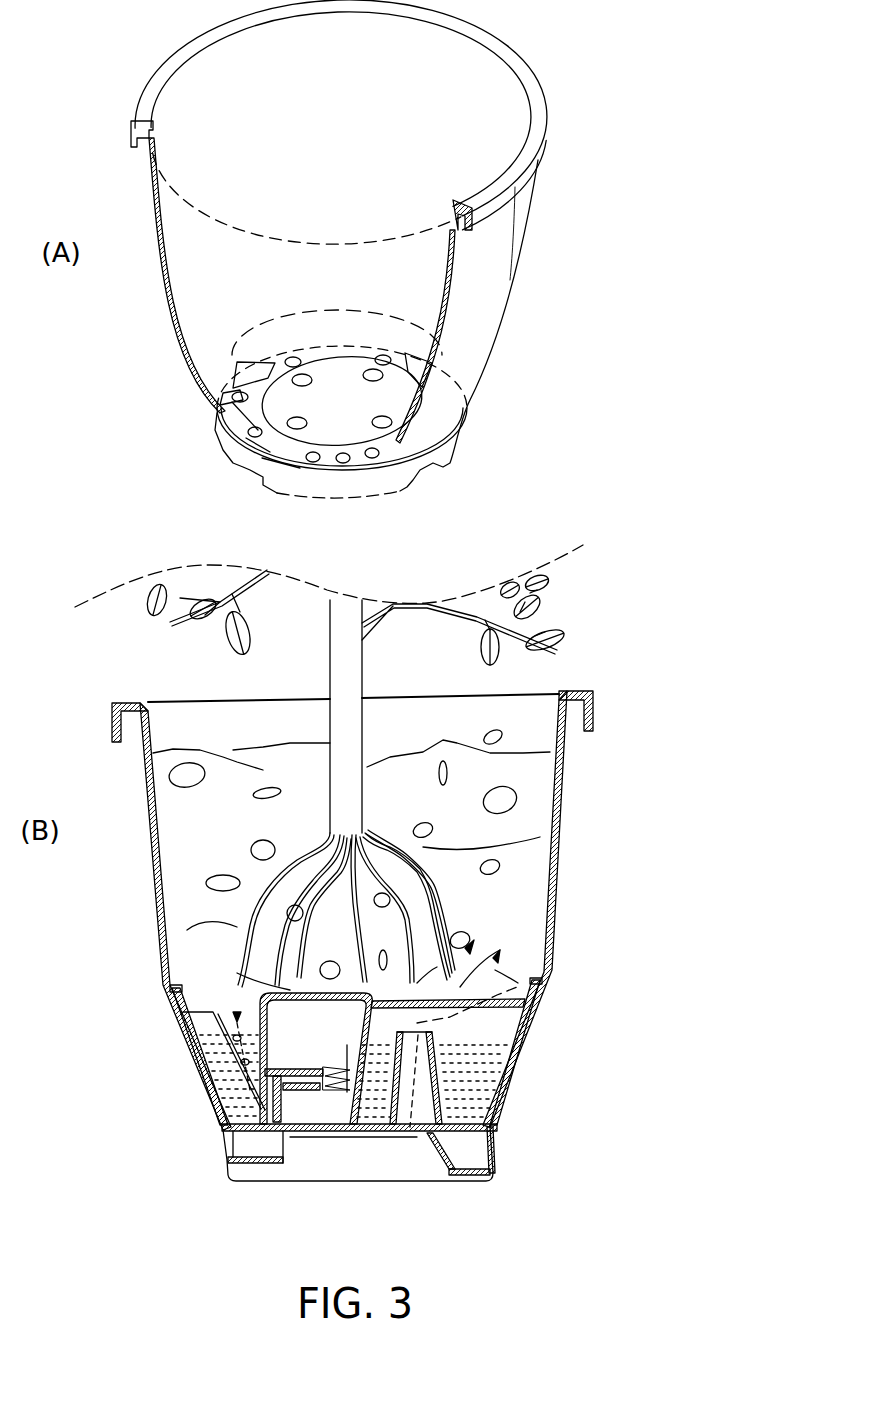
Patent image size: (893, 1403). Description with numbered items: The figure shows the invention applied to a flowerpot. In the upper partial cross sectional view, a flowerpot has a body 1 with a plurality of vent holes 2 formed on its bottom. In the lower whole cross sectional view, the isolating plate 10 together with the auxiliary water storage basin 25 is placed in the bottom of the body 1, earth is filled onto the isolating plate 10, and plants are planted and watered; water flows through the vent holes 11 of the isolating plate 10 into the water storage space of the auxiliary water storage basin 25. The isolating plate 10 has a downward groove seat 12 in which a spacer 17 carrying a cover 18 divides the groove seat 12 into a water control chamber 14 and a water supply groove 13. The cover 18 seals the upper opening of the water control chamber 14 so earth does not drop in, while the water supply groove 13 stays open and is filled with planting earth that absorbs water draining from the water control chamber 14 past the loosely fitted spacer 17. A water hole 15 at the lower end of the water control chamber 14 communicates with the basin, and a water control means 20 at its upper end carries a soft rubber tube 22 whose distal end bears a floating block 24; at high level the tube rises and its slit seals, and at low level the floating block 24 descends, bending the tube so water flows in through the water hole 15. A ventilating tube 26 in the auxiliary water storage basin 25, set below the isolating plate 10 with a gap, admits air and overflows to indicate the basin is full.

The body 1 is at (502, 283).
The vent holes 2 is at (220, 433).
The isolating plate 10 is at (533, 1025).
The vent holes 11 is at (522, 990).
The groove seat 12 is at (193, 1123).
The water supply groove 13 is at (190, 1077).
The water control chamber 14 is at (384, 1143).
The water hole 15 is at (223, 1160).
The spacer 17 is at (170, 1047).
The cover 18 is at (262, 993).
The water control means 20 is at (299, 1066).
The soft rubber tube 22 is at (296, 1095).
The floating block 24 is at (335, 1103).
The auxiliary water storage basin 25 is at (423, 1090).
The ventilating tube 26 is at (493, 1135).